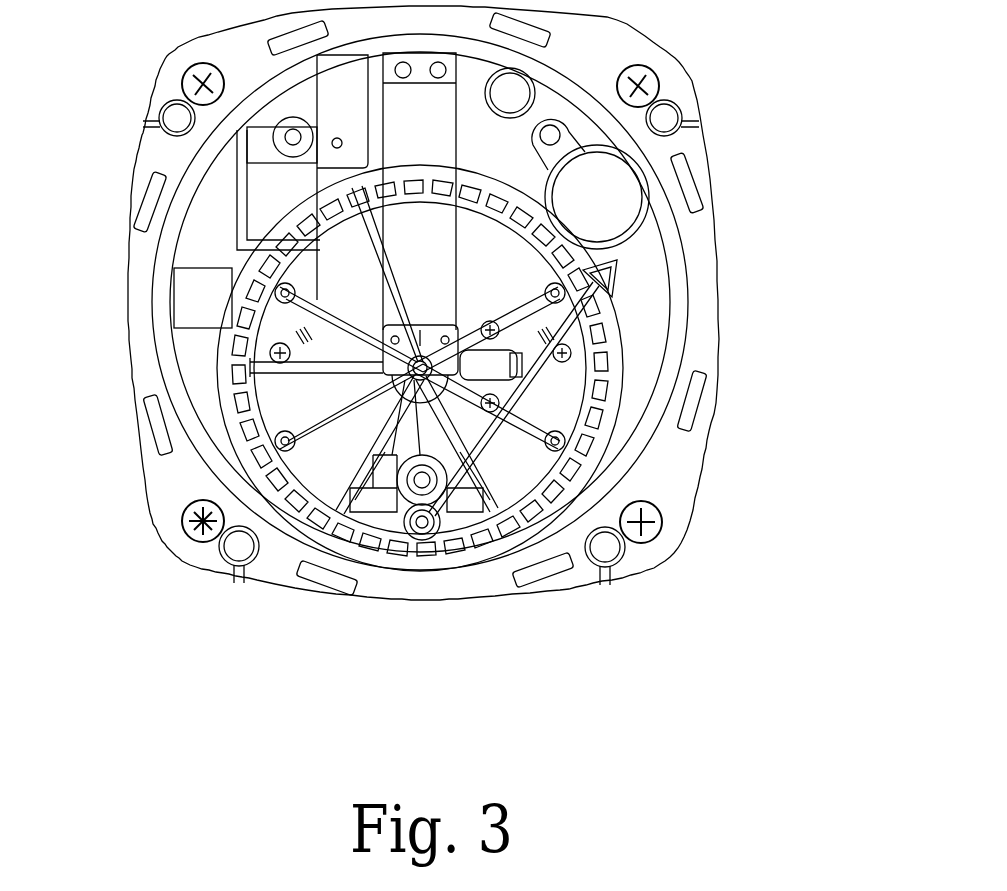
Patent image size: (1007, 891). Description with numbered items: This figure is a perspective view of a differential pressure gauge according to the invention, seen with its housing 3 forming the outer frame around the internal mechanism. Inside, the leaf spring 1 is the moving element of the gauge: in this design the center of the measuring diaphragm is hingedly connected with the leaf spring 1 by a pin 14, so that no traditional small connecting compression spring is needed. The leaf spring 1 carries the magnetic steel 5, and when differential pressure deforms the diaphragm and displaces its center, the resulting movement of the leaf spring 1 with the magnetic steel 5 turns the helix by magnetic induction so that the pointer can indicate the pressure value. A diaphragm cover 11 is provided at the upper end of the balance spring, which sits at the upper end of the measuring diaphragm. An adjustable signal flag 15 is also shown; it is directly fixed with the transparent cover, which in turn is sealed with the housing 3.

The leaf spring 1 is at (410, 193).
The housing 3 is at (650, 163).
The magnetic steel 5 is at (372, 482).
The diaphragm cover 11 is at (552, 397).
The pin 14 is at (405, 352).
The adjustable signal flag 15 is at (520, 373).